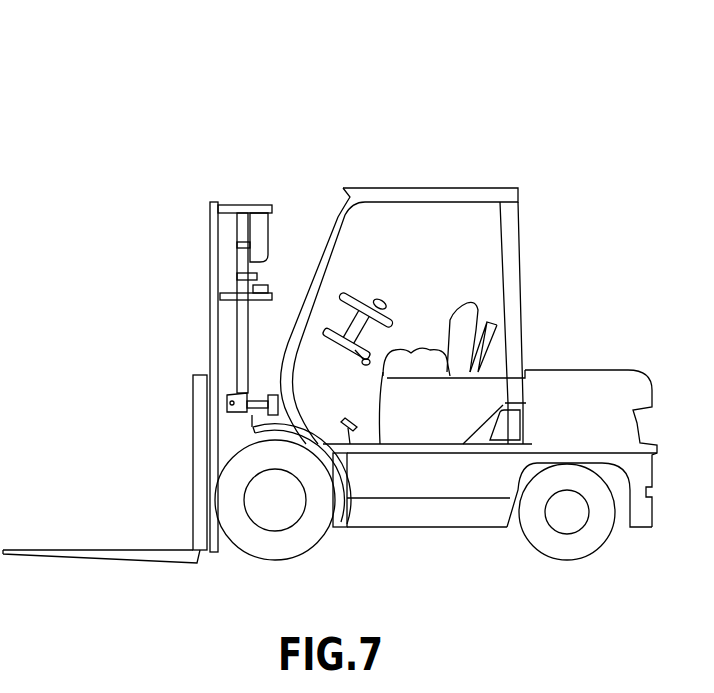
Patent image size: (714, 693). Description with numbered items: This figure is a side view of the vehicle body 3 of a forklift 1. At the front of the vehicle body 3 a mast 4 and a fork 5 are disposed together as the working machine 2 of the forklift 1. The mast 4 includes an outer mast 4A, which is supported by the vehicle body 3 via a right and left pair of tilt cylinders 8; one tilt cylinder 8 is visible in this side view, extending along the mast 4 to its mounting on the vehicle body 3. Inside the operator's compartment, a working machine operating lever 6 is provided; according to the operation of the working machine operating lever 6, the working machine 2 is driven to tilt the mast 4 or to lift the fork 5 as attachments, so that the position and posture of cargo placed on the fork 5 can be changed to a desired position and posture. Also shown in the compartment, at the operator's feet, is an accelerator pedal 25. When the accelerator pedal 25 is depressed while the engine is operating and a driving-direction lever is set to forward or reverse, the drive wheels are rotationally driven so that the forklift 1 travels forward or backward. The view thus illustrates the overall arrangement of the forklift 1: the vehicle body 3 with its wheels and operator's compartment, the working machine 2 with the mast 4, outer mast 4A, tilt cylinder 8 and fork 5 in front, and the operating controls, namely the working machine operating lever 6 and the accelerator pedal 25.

The forklift 1 is at (484, 72).
The working machine 2 is at (268, 142).
The vehicle body 3 is at (388, 515).
The mast 4 is at (219, 204).
The outer mast 4A is at (217, 353).
The fork 5 is at (57, 550).
The working machine operating lever 6 is at (368, 346).
The tilt cylinder 8 is at (262, 390).
The accelerator pedal 25 is at (356, 426).